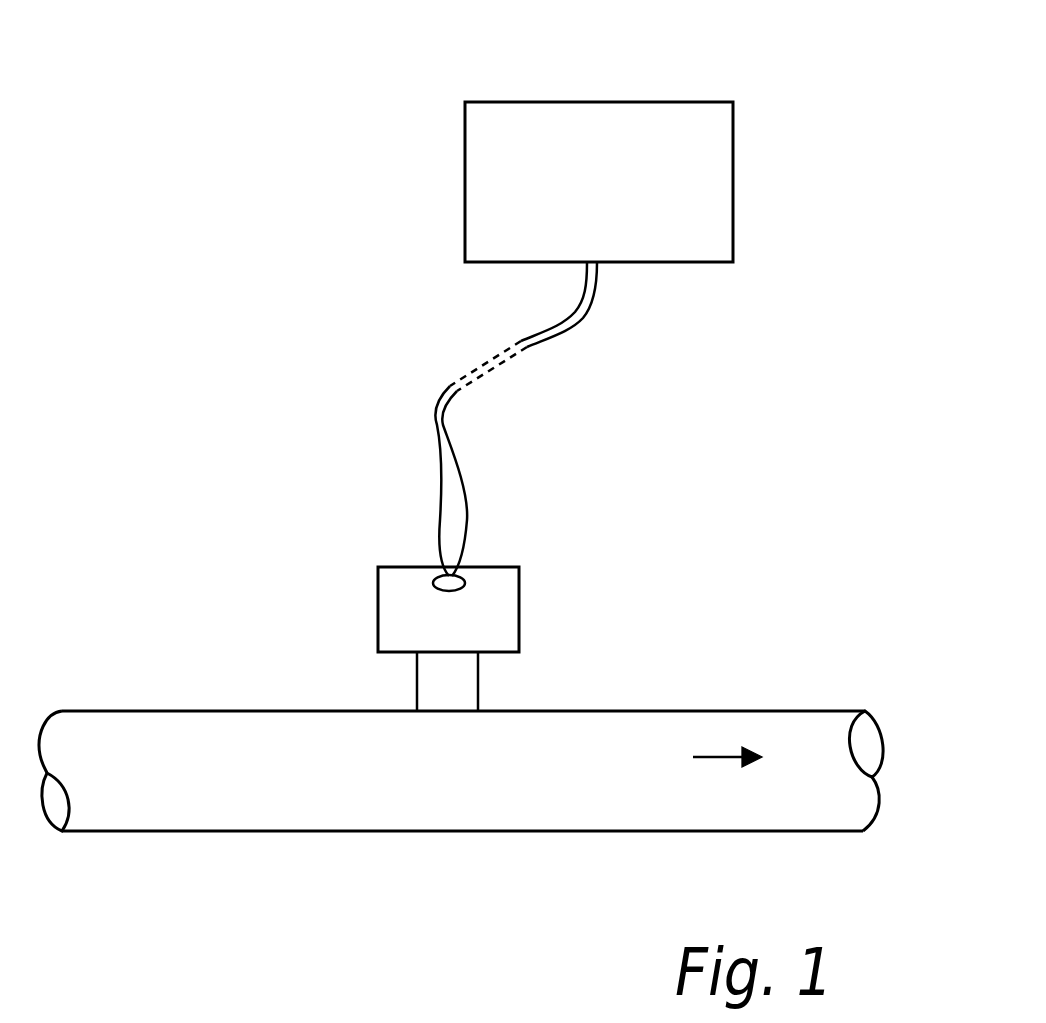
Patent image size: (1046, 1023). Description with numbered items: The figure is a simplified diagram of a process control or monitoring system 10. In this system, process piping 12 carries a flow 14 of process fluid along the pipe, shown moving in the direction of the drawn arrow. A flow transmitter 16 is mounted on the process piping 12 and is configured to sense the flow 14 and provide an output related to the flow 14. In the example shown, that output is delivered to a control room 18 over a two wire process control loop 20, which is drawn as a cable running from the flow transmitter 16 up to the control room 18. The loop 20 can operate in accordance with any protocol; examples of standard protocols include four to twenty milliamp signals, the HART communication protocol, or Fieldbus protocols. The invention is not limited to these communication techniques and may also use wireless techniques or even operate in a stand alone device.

The process control or monitoring system 10 is at (238, 440).
The process piping 12 is at (648, 712).
The flow 14 is at (727, 775).
The flow transmitter 16 is at (507, 567).
The control room 18 is at (604, 102).
The two wire process control loop 20 is at (464, 480).